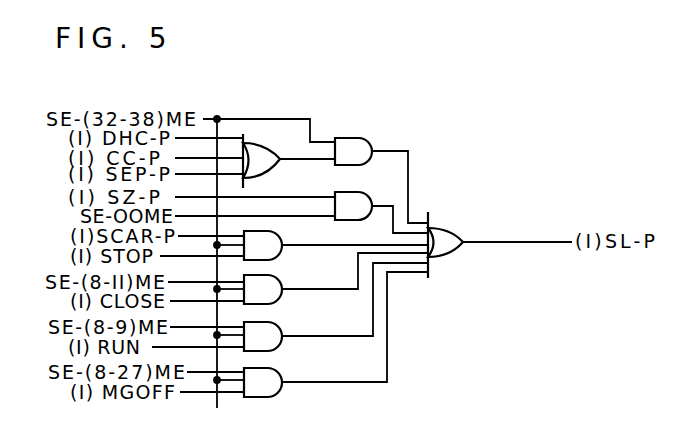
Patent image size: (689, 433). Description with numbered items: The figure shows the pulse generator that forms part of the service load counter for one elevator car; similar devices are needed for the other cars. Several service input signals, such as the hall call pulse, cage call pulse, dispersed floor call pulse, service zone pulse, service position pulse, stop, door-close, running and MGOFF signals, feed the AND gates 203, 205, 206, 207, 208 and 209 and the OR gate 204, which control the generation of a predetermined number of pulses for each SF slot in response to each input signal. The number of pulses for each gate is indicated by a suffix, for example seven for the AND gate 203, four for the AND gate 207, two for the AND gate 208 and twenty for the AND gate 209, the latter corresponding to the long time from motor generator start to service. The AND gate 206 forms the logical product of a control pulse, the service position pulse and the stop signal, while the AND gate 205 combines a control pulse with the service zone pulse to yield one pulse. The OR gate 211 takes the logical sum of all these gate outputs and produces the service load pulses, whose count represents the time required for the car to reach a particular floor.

The AND gate 203 is at (360, 134).
The OR gate 204 is at (273, 151).
The AND gate 205 is at (373, 199).
The AND gate 206 is at (283, 244).
The AND gate 207 is at (283, 285).
The AND gate 208 is at (282, 332).
The AND gate 209 is at (282, 379).
The OR gate 211 is at (460, 230).